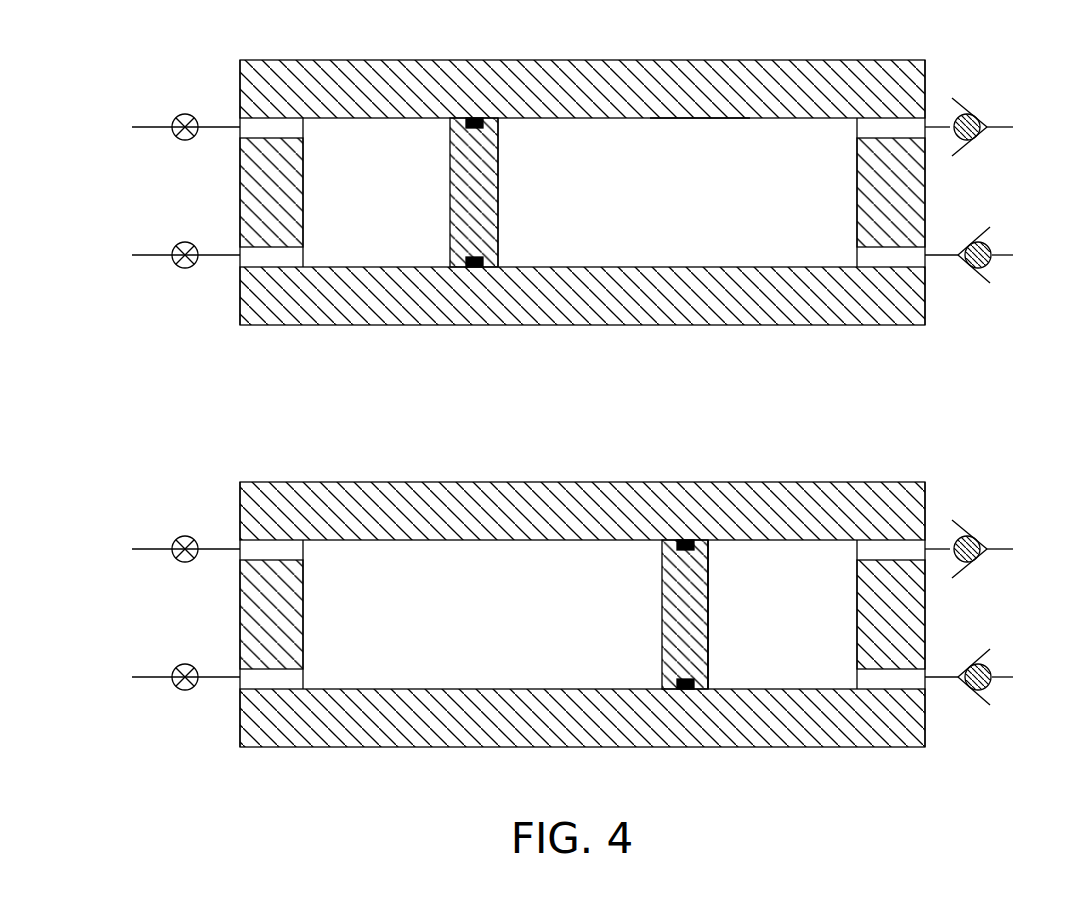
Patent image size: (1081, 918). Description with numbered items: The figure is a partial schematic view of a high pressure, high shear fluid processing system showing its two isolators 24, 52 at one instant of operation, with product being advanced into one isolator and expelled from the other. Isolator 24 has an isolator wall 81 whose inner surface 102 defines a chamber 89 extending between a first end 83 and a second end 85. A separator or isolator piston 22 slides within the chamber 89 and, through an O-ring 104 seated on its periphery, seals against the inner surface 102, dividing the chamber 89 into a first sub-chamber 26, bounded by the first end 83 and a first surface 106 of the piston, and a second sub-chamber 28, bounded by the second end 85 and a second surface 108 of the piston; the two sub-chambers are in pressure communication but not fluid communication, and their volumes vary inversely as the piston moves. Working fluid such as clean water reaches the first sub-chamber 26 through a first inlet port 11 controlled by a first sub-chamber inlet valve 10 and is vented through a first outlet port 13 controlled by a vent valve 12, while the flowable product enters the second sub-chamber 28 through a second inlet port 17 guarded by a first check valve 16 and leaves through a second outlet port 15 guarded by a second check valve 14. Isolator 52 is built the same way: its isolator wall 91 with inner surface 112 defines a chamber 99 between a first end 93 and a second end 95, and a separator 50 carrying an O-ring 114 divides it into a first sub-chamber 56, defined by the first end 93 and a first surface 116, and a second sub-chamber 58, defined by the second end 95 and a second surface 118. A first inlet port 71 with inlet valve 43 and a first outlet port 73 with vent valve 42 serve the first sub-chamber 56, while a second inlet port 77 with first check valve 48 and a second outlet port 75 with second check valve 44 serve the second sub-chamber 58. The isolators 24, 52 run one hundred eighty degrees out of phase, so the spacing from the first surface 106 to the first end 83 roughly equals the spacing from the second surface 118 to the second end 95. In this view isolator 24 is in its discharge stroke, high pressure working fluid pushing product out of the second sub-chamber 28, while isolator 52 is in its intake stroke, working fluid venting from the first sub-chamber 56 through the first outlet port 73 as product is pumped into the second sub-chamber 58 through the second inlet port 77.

The first sub-chamber inlet valve 10 is at (161, 659).
The first inlet port 11 is at (201, 704).
The first sub-chamber outlet valve 12 is at (161, 530).
The first outlet port 13 is at (186, 498).
The second check valve 14 is at (1002, 671).
The second outlet port 15 is at (969, 708).
The first check valve 16 is at (987, 538).
The second inlet port 17 is at (969, 506).
The separator 22 is at (657, 566).
The isolator 24 is at (582, 584).
The first sub-chamber 26 is at (368, 668).
The second sub-chamber 28 is at (742, 562).
The isolator wall 81 is at (582, 737).
The first end 83 is at (282, 673).
The second end 85 is at (881, 676).
The chamber 89 is at (839, 564).
The inner surface 102 is at (582, 491).
The O-ring 104 is at (693, 491).
The first surface 106 is at (663, 707).
The second surface 108 is at (746, 663).
The first sub-chamber outlet valve 42 is at (177, 117).
The first sub-chamber inlet valve 43 is at (177, 247).
The second check valve 44 is at (990, 247).
The first check valve 48 is at (975, 115).
The separator 50 is at (427, 128).
The isolator 52 is at (337, 52).
The first sub-chamber 56 is at (378, 227).
The second sub-chamber 58 is at (662, 240).
The first inlet port 71 is at (270, 267).
The first outlet port 73 is at (240, 120).
The second outlet port 75 is at (925, 267).
The second inlet port 77 is at (925, 120).
The isolator wall 91 is at (610, 90).
The first end 93 is at (303, 227).
The second end 95 is at (857, 207).
The chamber 99 is at (762, 152).
The inner surface 112 is at (700, 128).
The O-ring 114 is at (472, 118).
The first surface 116 is at (450, 203).
The second surface 118 is at (498, 203).